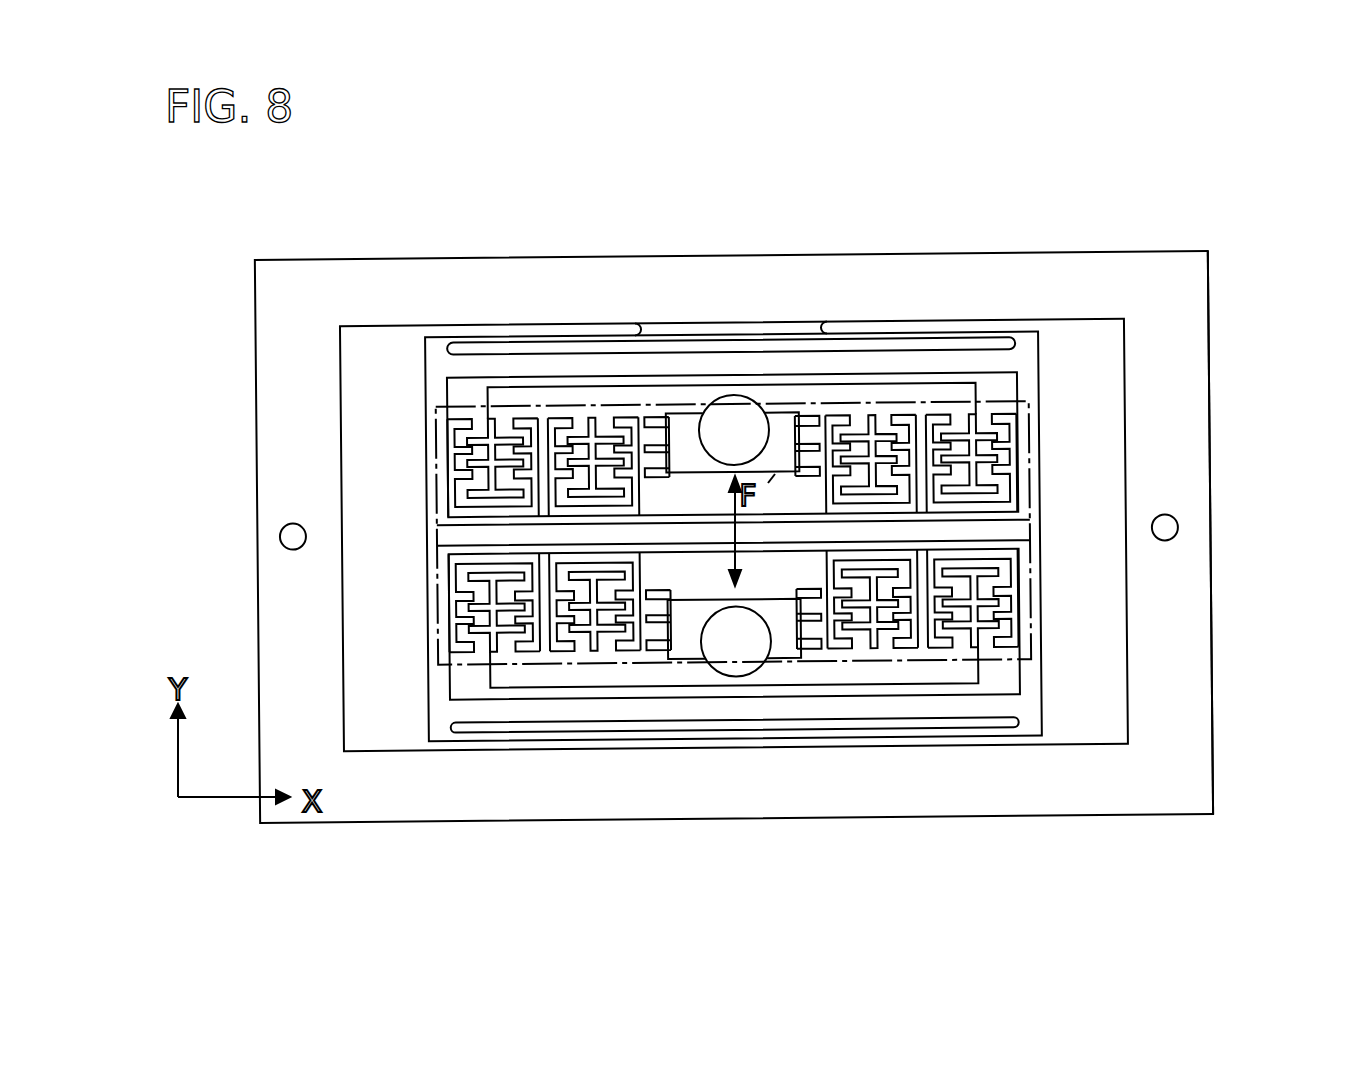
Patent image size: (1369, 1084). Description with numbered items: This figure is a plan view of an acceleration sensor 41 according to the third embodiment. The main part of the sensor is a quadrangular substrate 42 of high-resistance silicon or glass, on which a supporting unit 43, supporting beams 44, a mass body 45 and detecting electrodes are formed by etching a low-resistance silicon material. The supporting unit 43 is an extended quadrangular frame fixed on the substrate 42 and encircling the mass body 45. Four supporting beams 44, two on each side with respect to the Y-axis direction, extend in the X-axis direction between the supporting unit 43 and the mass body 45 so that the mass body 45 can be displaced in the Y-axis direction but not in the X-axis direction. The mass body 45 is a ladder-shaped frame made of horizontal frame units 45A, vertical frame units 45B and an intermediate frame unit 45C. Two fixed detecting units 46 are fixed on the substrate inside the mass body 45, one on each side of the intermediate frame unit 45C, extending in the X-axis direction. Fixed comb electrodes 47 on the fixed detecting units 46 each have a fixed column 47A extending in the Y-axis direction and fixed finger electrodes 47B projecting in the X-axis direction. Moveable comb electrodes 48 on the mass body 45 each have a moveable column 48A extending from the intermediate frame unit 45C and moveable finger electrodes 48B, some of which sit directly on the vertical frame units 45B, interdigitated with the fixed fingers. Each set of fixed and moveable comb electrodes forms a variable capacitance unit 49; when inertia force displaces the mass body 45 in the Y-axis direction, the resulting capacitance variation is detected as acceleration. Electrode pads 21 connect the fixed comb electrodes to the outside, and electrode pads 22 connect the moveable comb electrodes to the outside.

The acceleration sensor 41 is at (1163, 236).
The substrate 42 is at (1100, 340).
The supporting unit 43 is at (1190, 312).
The supporting beams 44 is at (468, 333).
The mass body 45 is at (1000, 360).
The horizontal frame units 45A is at (503, 358).
The vertical frame units 45B is at (428, 432).
The intermediate frame unit 45C is at (465, 538).
The fixed detecting units 46 is at (675, 392).
The fixed comb electrodes 47 is at (877, 440).
The fixed column 47A is at (995, 441).
The fixed finger electrodes 47B is at (603, 430).
The moveable comb electrodes 48 is at (548, 430).
The moveable column 48A is at (934, 652).
The moveable finger electrodes 48B is at (458, 479).
The variable capacitance units 49 is at (420, 403).
The electrode pads 21 is at (735, 425).
The electrode pads 22 is at (279, 536).